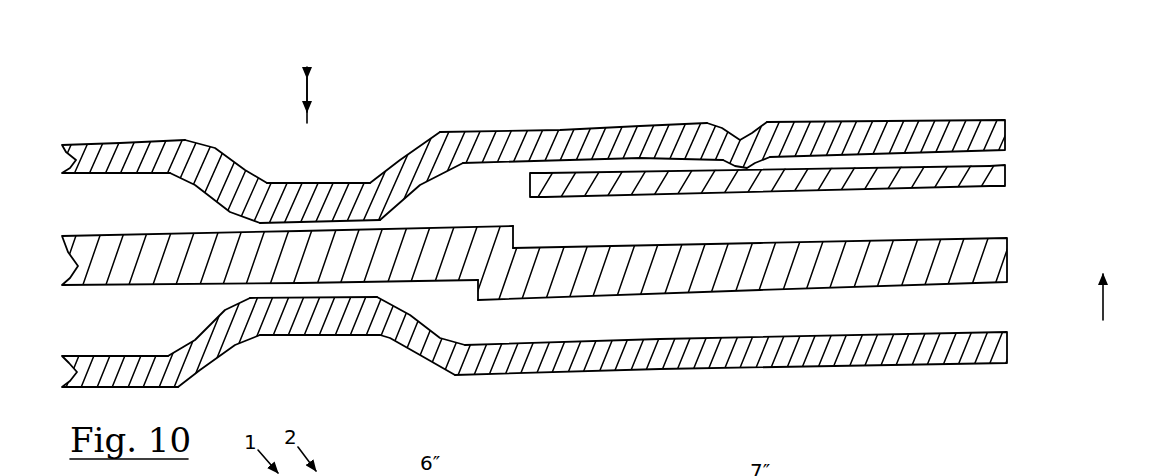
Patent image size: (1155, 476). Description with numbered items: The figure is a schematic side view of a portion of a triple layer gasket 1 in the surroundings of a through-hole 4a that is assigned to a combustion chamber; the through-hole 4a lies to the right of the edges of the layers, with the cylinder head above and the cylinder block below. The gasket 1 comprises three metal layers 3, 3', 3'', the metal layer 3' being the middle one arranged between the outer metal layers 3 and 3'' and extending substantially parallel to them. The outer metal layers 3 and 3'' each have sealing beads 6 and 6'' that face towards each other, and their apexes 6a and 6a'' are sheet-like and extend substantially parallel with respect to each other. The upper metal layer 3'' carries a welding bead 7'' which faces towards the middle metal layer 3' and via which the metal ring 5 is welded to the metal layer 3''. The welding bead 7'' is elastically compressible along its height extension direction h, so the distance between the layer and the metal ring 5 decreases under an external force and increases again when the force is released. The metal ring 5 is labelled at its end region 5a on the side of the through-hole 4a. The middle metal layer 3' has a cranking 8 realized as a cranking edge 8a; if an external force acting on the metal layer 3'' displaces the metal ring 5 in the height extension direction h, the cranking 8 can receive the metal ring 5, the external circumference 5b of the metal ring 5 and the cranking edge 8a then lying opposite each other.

The gasket 1 is at (187, 76).
The height extension direction h is at (318, 95).
The metal layer 3 is at (526, 354).
The metal layer 3' is at (523, 280).
The metal layer 3'' is at (532, 153).
The sealing bead 6 is at (316, 355).
The apex of the sealing bead 6a is at (315, 340).
The sealing bead 6'' is at (316, 160).
The apex of the sealing bead 6a'' is at (320, 183).
The welding bead 7'' is at (738, 124).
The metal ring 5 is at (647, 192).
The right end of insert strip 5a is at (1008, 177).
The external circumference of the metal ring 5b is at (528, 182).
The cranking 8 is at (762, 231).
The cranking edge 8a is at (506, 272).
The through-hole 4a is at (1109, 319).